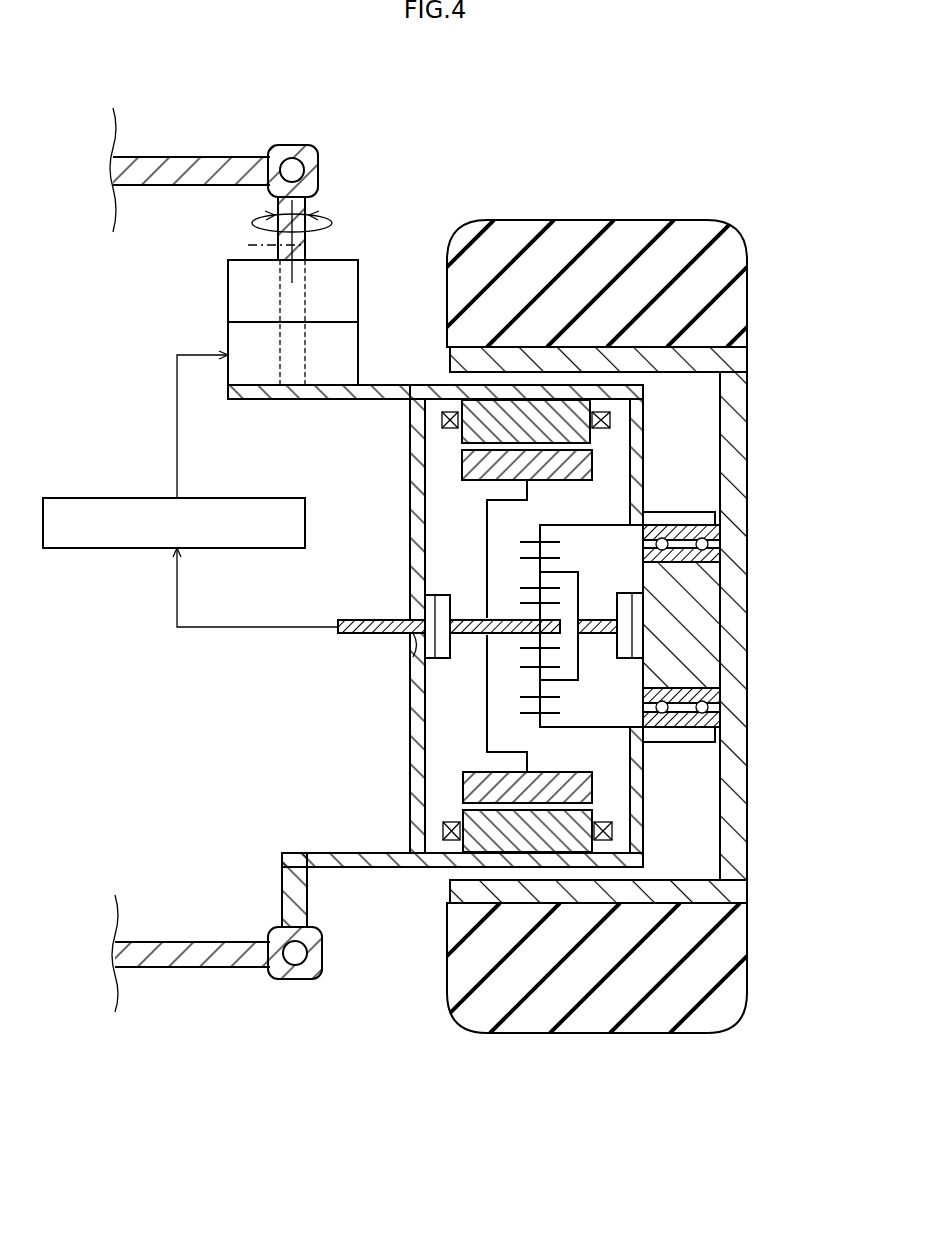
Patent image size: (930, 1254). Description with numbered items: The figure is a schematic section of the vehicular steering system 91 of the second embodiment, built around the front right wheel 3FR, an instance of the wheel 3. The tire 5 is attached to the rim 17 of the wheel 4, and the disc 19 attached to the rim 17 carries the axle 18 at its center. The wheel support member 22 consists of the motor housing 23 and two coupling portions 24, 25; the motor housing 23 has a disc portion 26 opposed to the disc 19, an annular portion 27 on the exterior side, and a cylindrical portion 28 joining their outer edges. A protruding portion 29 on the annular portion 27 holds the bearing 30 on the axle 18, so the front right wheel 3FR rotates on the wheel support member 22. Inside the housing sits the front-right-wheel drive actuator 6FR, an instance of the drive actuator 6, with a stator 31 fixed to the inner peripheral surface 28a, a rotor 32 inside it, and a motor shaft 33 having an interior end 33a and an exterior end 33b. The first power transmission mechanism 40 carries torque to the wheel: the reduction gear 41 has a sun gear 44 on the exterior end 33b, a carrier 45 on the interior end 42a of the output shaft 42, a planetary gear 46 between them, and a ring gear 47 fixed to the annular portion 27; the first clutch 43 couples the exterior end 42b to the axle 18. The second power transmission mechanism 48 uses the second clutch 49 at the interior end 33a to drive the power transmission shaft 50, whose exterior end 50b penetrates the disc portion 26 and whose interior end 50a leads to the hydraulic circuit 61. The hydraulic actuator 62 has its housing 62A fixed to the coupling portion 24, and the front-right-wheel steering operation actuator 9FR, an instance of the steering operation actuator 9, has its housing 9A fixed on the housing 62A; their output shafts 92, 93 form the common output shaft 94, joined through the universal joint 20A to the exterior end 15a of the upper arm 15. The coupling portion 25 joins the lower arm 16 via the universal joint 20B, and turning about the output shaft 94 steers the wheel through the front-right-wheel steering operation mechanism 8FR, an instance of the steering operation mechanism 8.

The front right wheel 3FR is at (702, 220).
The wheel 3 is at (613, 594).
The tire 5 is at (630, 232).
The wheel 4 is at (750, 363).
The rim 17 is at (680, 365).
The disc 19 is at (730, 392).
The axle 18 is at (690, 660).
The protruding portion 29 is at (681, 513).
The bearing 30 is at (719, 533).
The front-right-wheel drive actuator 6FR is at (540, 397).
The drive actuator 6 is at (537, 549).
The wheel support member 22 is at (392, 383).
The motor housing 23 is at (646, 431).
The annular portion 27 is at (644, 470).
The disc portion 26 is at (410, 790).
The cylindrical portion 28 is at (440, 866).
The inner peripheral surface 28a is at (443, 832).
The stator 31 is at (462, 438).
The rotor 32 is at (462, 472).
The motor shaft 33 is at (468, 637).
The interior end 33a is at (431, 599).
The exterior end 33b is at (533, 621).
The second clutch 49 is at (428, 603).
The first power transmission mechanism 40 is at (605, 731).
The reduction gear 41 is at (602, 522).
The ring gear 47 is at (620, 719).
The carrier 45 is at (580, 587).
The sun gear 44 is at (530, 668).
The planetary gear 46 is at (529, 715).
The output shaft 42 is at (600, 638).
The first clutch 43 is at (638, 626).
The interior end 42a is at (627, 597).
The exterior end 42b is at (627, 657).
The power transmission shaft 50 is at (365, 636).
The interior end 50a is at (340, 638).
The exterior end 50b is at (410, 653).
The hydraulic circuit 61 is at (143, 503).
The second power transmission mechanism 48 is at (215, 641).
The front-right-wheel steering operation actuator 9FR is at (235, 278).
The steering operation actuator 9 is at (288, 321).
The housing 9A is at (360, 270).
The hydraulic actuator 62 is at (235, 336).
The housing 62A is at (360, 338).
The output shaft 92 is at (292, 378).
The front-right-wheel steering operation mechanism 8FR is at (248, 402).
The steering operation mechanism 8 is at (316, 438).
The coupling portion 24 is at (334, 400).
The universal joint 20A is at (302, 148).
The output shaft 93 is at (311, 210).
The common output shaft 94 is at (312, 246).
The upper arm 15 is at (146, 160).
The exterior end 15a is at (234, 162).
The lower arm 16 is at (147, 943).
The universal joint 20B is at (290, 980).
The coupling portion 25 is at (352, 868).
The vehicular steering system 91 is at (422, 1083).